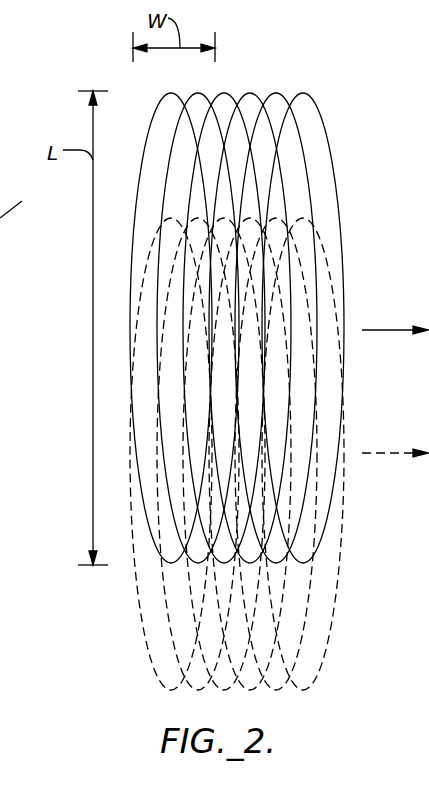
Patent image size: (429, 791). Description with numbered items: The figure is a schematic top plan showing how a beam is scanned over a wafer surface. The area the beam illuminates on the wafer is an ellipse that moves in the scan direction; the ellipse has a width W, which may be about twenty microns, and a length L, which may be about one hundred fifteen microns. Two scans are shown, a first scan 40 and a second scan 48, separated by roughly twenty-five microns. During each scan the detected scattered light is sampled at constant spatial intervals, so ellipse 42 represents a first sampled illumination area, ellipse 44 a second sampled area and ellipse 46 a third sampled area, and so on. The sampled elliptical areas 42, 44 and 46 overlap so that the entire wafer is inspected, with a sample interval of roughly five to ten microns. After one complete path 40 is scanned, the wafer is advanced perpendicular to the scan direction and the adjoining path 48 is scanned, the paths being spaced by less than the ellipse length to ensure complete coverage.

The first scan 40 is at (394, 330).
The ellipse 42 is at (165, 100).
The ellipse 44 is at (203, 94).
The ellipse 46 is at (228, 95).
The second scan 48 is at (388, 453).